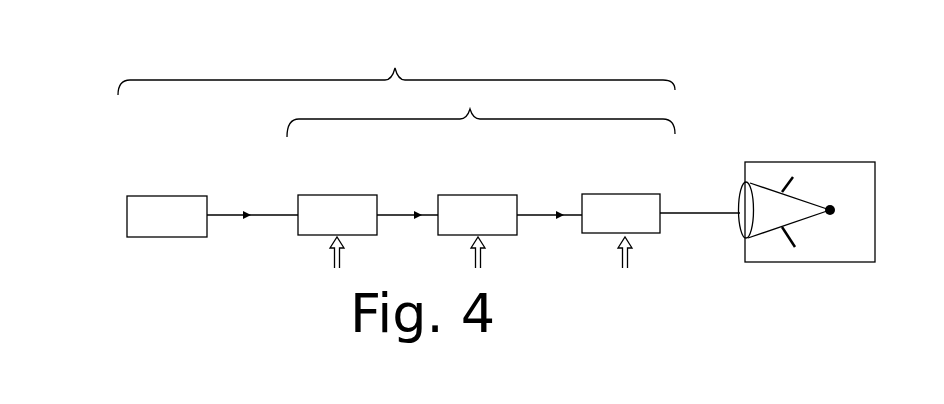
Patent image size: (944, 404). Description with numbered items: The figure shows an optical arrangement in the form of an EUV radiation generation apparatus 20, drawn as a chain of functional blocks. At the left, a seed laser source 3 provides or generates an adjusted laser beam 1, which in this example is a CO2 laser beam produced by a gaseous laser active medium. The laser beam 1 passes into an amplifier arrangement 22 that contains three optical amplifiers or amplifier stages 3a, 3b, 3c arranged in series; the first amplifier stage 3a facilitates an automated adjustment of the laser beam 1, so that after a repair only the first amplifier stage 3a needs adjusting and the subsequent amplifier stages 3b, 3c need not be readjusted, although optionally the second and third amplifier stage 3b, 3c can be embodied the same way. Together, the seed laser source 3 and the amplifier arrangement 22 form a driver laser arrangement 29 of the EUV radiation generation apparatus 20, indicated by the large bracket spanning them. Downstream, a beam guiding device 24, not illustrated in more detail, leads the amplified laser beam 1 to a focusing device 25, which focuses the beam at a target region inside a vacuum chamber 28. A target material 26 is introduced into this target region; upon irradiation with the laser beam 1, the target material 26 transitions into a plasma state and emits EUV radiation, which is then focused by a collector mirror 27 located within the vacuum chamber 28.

The EUV radiation generation apparatus 20 is at (122, 142).
The driver laser arrangement 29 is at (396, 66).
The amplifier arrangement 22 is at (481, 109).
The seed laser source 3 is at (170, 218).
The laser beam 1 is at (231, 213).
The first amplifier stage 3a is at (343, 212).
The second amplifier stage 3b is at (485, 210).
The third amplifier stage 3c is at (625, 212).
The beam guiding device 24 is at (703, 214).
The focusing device 25 is at (738, 197).
The target material 26 is at (837, 207).
The collector mirror 27 is at (783, 232).
The vacuum chamber 28 is at (817, 162).